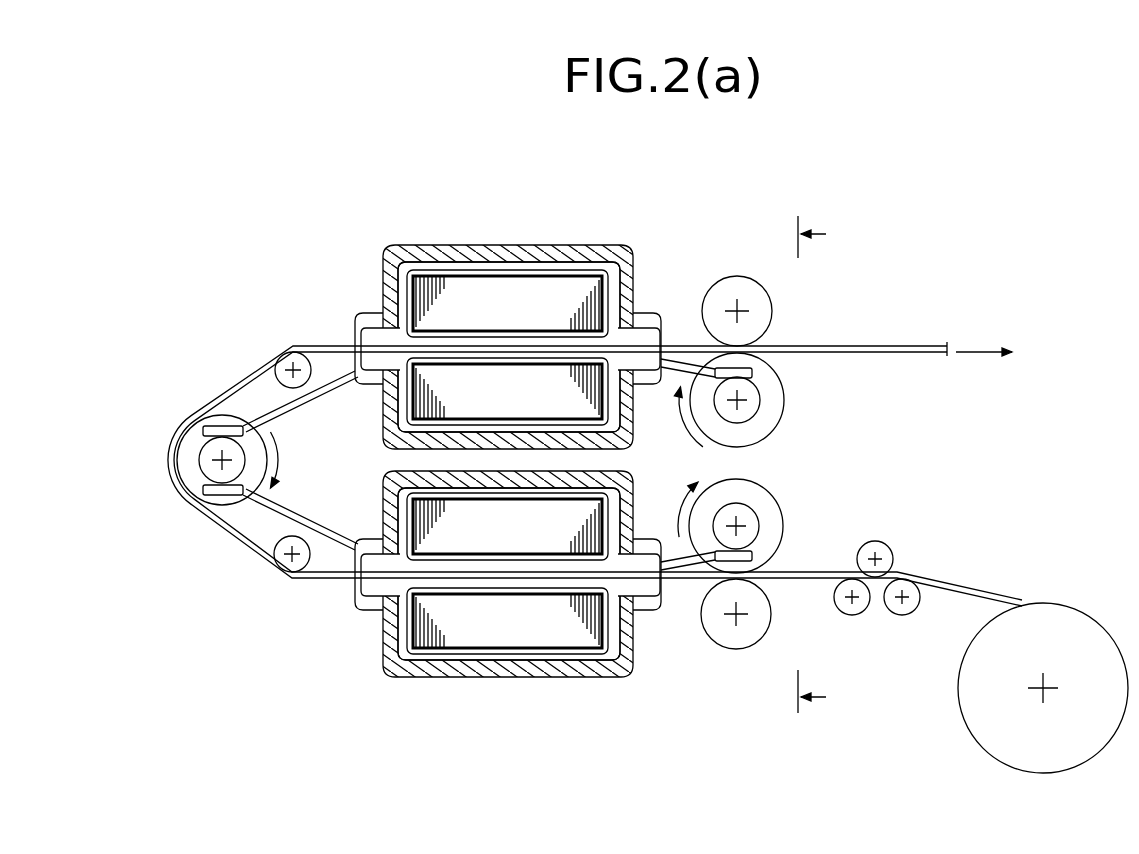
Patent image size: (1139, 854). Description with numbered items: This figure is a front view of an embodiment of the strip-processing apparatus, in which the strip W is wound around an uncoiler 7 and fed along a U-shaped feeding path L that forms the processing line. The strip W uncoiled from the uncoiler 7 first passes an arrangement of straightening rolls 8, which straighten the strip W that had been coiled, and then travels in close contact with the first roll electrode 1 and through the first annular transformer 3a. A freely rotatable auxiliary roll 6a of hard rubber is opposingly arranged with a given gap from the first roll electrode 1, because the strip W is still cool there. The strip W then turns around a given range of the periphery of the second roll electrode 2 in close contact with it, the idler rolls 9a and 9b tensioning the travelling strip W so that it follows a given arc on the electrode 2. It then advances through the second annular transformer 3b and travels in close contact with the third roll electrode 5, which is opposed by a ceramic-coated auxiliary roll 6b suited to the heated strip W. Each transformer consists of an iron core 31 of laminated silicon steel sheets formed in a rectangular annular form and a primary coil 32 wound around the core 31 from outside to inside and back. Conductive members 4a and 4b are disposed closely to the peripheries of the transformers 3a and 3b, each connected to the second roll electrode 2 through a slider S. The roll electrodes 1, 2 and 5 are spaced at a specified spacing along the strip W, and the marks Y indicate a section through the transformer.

The first roll electrode 1 is at (777, 502).
The second roll electrode 2 is at (265, 441).
The first annular transformer 3a is at (475, 657).
The second annular transformer 3b is at (512, 263).
The conductive member 4a is at (405, 680).
The conductive member 4b is at (585, 245).
The third roll electrode 5 is at (783, 418).
The auxiliary roll 6a is at (718, 652).
The auxiliary roll 6b is at (715, 283).
The uncoiler 7 is at (957, 705).
The straightening rolls 8 is at (907, 552).
The idler roll 9a is at (272, 559).
The idler roll 9b is at (273, 363).
The iron core 31 is at (478, 292).
The primary coil 32 is at (430, 268).
The slider S is at (205, 427).
The strip W is at (965, 583).
The section line Y is at (824, 466).
The feeding path L is at (996, 354).